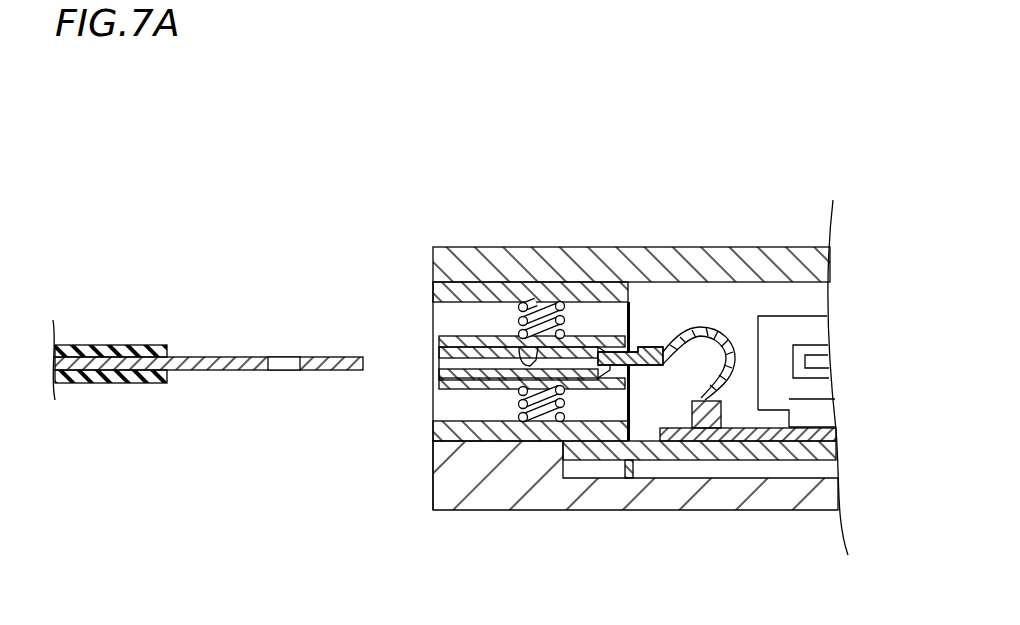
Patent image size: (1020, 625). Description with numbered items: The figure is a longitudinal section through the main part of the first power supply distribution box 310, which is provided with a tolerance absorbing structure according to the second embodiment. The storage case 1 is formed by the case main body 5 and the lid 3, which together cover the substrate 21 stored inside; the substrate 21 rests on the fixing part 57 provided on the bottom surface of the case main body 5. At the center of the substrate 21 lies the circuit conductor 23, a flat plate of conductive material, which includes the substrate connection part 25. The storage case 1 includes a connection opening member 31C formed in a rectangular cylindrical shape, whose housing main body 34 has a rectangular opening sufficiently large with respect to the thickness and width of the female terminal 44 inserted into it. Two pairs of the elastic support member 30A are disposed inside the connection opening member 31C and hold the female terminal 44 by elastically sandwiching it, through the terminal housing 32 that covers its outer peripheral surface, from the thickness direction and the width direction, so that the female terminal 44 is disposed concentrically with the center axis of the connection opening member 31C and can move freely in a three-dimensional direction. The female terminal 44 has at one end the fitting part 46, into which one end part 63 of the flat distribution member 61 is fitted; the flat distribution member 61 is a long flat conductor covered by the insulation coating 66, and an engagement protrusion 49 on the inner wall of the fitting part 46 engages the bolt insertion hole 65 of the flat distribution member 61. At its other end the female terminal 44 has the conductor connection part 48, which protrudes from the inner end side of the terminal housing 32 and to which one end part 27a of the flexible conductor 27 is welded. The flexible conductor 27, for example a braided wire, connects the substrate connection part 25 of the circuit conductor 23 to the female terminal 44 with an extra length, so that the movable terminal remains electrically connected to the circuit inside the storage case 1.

The storage case 1 is at (803, 224).
The first power supply distribution box 310 is at (461, 197).
The lid 3 is at (532, 246).
The case main body 5 is at (545, 511).
The connection opening member 31C is at (326, 183).
The housing main body 34 is at (497, 285).
The elastic support member 30A is at (521, 321).
The terminal housing 32 is at (463, 336).
The fitting part 46 is at (477, 383).
The female terminal 44 is at (495, 392).
The engagement protrusion 49 is at (543, 419).
The conductor connection part 48 is at (650, 368).
The one end part of the flexible conductor 27a is at (653, 352).
The flexible conductor 27 is at (700, 324).
The substrate connection part 25 is at (691, 407).
The circuit conductor 23 is at (745, 428).
The substrate 21 is at (737, 463).
The fixing part 57 is at (600, 470).
The flat distribution member 61 is at (208, 350).
The bolt insertion hole 65 is at (285, 356).
The one end part of the flat distribution member 63 is at (330, 372).
The insulation coating 66 is at (108, 382).